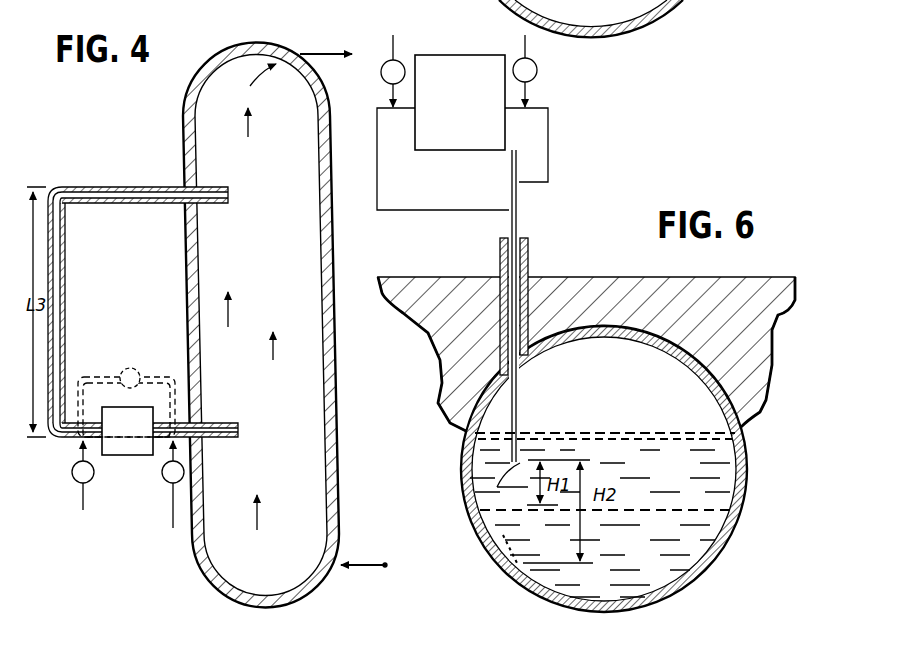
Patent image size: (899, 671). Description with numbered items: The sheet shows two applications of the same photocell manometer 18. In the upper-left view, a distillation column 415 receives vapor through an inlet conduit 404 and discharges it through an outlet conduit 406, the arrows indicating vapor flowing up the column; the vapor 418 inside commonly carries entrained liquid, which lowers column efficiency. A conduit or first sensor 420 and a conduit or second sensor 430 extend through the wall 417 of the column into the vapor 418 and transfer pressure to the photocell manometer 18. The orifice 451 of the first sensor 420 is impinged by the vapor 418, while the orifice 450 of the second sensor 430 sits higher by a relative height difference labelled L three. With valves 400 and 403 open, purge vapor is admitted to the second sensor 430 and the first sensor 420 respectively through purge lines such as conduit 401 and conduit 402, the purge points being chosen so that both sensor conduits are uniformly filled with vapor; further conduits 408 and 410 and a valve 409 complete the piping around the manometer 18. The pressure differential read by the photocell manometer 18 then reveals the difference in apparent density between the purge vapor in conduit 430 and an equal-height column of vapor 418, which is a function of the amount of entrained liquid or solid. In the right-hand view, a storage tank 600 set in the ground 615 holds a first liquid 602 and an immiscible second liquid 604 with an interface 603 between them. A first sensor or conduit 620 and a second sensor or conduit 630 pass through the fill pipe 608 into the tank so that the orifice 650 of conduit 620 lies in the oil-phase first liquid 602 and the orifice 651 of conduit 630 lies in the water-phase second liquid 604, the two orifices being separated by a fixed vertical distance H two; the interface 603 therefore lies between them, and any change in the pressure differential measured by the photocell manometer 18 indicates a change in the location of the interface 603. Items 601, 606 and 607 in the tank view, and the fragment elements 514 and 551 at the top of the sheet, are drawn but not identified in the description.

In FIG. 4, the photocell manometer 18 is at (138, 442).
In FIG. 6, the photocell manometer 18 is at (470, 109).
In FIG. 4, the valve 400 is at (72, 476).
In FIG. 4, the conduit 401 is at (87, 452).
In FIG. 4, the conduit 402 is at (167, 456).
In FIG. 4, the valve 403 is at (177, 486).
In FIG. 4, the inlet conduit 404 is at (352, 567).
In FIG. 4, the outlet conduit 406 is at (330, 31).
In FIG. 4, the conduit 408 is at (86, 377).
In FIG. 4, the valve 409 is at (130, 367).
In FIG. 4, the conduit 410 is at (153, 372).
In FIG. 4, the distillation column 415 is at (341, 472).
In FIG. 4, the wall 417 is at (185, 134).
In FIG. 4, the vapor 418 is at (312, 407).
In FIG. 4, the conduit or first sensor 420 is at (225, 445).
In FIG. 4, the conduit or second sensor 430 is at (67, 282).
In FIG. 4, the orifice 450 is at (228, 192).
In FIG. 4, the orifice 451 is at (238, 430).
In FIG. 6, the vessel wall 514 is at (692, 5).
In FIG. 6, the vessel element 551 is at (494, 2).
In FIG. 6, the storage tank 600 is at (748, 474).
In FIG. 6, the voltmeter 601 is at (389, 59).
In FIG. 6, the first liquid 602 is at (389, 100).
In FIG. 6, the interface 603 is at (538, 72).
In FIG. 6, the second liquid 604 is at (538, 93).
In FIG. 6, the upper liquid level 606 is at (547, 431).
In FIG. 6, the lower liquid level 607 is at (492, 548).
In FIG. 6, the fill pipe 608 is at (530, 257).
In FIG. 6, the ground 615 is at (705, 293).
In FIG. 6, the first sensor or conduit 620 is at (550, 158).
In FIG. 6, the second sensor or conduit 630 is at (378, 182).
In FIG. 6, the orifice 650 is at (497, 487).
In FIG. 6, the orifice 651 is at (510, 577).